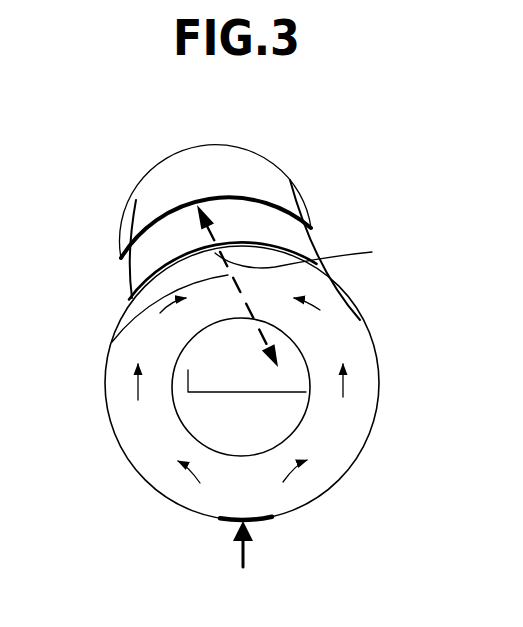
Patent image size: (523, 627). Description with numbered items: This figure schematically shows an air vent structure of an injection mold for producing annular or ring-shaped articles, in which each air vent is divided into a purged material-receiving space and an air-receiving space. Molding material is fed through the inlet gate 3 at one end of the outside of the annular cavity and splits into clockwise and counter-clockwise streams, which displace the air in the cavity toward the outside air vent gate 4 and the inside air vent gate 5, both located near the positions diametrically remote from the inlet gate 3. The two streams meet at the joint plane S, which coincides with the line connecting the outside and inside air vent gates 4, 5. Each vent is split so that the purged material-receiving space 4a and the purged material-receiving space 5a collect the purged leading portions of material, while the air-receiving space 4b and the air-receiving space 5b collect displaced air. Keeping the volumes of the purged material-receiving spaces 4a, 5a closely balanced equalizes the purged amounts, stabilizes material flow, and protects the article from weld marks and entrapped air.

The inlet gate 3 is at (220, 521).
The outside air vent gate 4 is at (260, 250).
The purged material-receiving space 4a is at (162, 254).
The air-receiving space 4b is at (240, 178).
The inside air vent gate 5 is at (262, 320).
The purged material-receiving space 5a is at (222, 378).
The air-receiving space 5b is at (248, 417).
The joint plane S is at (112, 342).